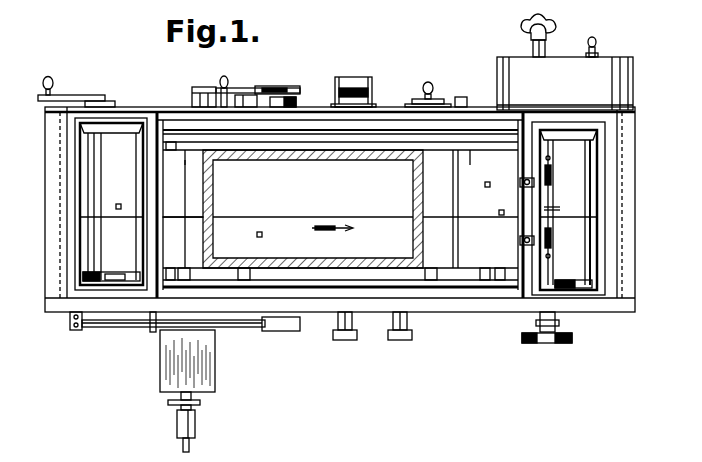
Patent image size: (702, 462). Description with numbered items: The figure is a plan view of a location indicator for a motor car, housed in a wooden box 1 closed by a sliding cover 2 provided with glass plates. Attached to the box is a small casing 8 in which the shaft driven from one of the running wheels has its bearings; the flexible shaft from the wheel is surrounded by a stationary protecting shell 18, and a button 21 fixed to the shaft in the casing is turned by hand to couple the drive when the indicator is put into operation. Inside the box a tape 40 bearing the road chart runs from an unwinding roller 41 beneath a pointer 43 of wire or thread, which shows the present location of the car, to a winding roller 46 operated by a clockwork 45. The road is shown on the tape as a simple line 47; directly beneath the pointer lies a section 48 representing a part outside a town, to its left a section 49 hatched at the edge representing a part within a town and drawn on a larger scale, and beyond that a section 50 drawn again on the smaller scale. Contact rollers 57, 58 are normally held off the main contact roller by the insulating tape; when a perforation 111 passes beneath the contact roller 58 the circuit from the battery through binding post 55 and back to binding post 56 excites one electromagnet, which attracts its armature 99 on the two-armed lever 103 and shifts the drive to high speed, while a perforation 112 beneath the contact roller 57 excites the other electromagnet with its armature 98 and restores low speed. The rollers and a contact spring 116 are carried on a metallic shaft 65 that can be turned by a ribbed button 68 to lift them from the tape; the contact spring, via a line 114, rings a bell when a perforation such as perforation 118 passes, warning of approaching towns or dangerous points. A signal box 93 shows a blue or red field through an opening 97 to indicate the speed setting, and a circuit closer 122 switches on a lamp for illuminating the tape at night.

The wooden box 1 is at (127, 107).
The sliding cover 2 is at (147, 272).
The small casing 8 is at (215, 380).
The protecting shell 18 is at (197, 444).
The button 21 is at (202, 403).
The tape 40 is at (474, 295).
The unwinding roller 41 is at (82, 273).
The pointer 43 is at (453, 176).
The clockwork 45 is at (565, 62).
The winding roller 46 is at (598, 280).
The line 47 is at (371, 222).
The section 48 is at (472, 160).
The section 49 is at (305, 158).
The section 50 is at (185, 160).
The binding post 55 is at (412, 334).
The binding post 56 is at (349, 340).
The contact roller 57 is at (520, 242).
The contact roller 58 is at (520, 182).
The metallic shaft 65 is at (556, 320).
The ribbed button 68 is at (560, 344).
The box 93 is at (370, 82).
The opening 97 is at (370, 93).
The armature 98 is at (280, 331).
The armature 99 is at (283, 86).
The two-armed lever 103 is at (255, 87).
The perforation 111 is at (487, 188).
The perforation 112 is at (262, 237).
The line 114 is at (500, 216).
The contact spring 116 is at (568, 203).
The perforation 118 is at (117, 210).
The circuit closer 122 is at (431, 92).